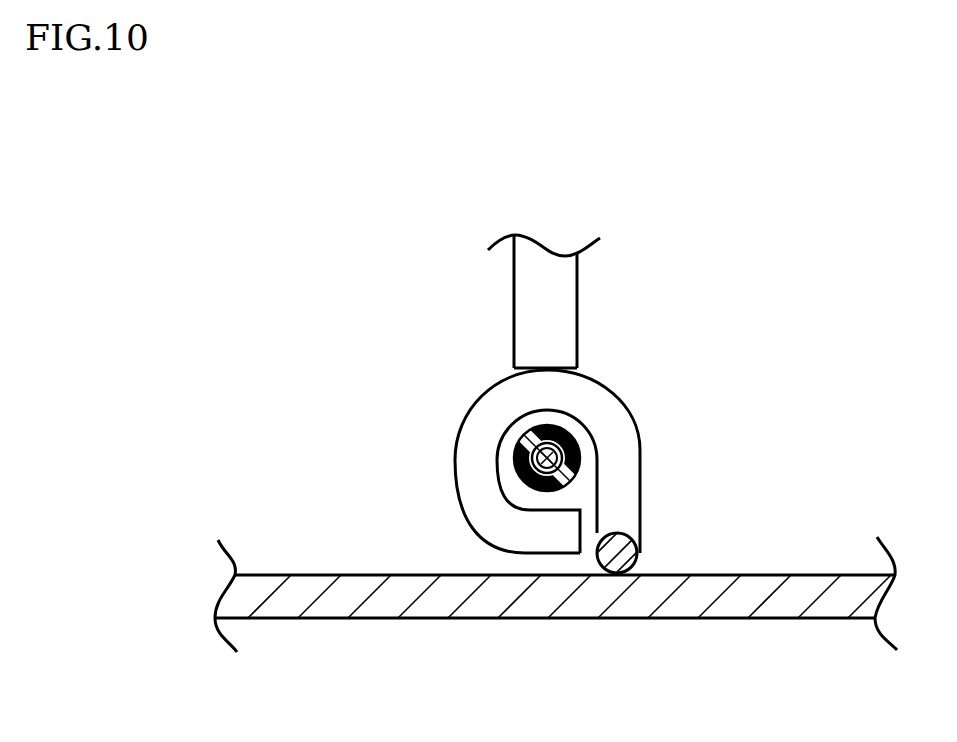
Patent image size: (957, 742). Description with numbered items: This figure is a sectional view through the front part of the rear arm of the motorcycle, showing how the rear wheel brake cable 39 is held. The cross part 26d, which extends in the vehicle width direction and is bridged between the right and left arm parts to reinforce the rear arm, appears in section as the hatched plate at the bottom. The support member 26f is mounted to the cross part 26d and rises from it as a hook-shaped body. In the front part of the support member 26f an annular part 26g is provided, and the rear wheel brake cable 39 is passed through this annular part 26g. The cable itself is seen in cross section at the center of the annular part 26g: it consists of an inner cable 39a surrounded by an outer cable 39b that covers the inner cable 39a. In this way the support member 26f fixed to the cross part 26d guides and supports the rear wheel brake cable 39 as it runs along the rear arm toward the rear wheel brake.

The cross part 26d is at (740, 590).
The support member 26f is at (540, 408).
The annular part 26g is at (473, 458).
The rear wheel brake cable 39 is at (378, 369).
The inner cable 39a is at (518, 447).
The outer cable 39b is at (546, 450).